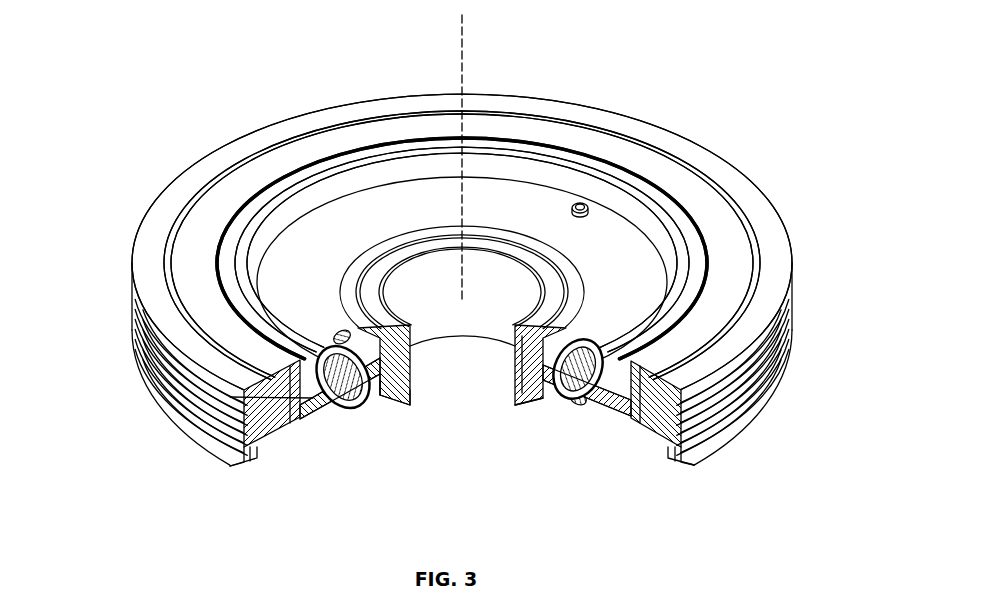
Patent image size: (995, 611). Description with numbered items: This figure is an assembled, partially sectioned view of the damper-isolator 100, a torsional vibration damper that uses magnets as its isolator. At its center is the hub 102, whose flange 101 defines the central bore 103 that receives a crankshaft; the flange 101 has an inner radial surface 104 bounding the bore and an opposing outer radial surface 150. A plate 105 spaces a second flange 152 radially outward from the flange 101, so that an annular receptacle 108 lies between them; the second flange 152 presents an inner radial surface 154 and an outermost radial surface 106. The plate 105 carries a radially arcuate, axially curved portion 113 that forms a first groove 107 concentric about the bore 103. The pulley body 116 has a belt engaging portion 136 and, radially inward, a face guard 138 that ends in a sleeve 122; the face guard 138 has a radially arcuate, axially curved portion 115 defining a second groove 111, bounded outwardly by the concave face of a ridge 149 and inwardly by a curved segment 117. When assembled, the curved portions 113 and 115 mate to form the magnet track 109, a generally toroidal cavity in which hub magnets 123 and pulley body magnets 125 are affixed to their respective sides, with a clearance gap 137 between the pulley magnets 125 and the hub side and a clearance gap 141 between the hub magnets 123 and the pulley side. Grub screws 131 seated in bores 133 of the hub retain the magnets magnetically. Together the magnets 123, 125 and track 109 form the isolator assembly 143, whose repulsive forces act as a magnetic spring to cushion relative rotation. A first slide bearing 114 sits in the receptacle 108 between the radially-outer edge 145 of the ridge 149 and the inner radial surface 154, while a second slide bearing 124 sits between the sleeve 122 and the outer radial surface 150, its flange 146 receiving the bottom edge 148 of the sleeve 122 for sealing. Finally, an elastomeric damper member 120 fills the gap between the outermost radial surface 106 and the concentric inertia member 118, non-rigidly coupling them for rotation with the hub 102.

The damper-isolator 100 is at (724, 47).
The flange 101 is at (516, 332).
The hub 102 is at (248, 298).
The central bore 103 is at (438, 277).
The inner radial surface 104 is at (410, 368).
The plate 105 is at (388, 217).
The outermost radial surface 106 is at (640, 293).
The first groove 107 is at (337, 237).
The annular receptacle 108 is at (377, 400).
The magnet track 109 is at (443, 200).
The second groove 111 is at (350, 417).
The radially arcuate, axially curved portion 113 is at (610, 250).
The first slide bearing 114 is at (150, 371).
The radially arcuate, axially curved portion 115 is at (575, 390).
The pulley body 116 is at (227, 450).
The curved segment 117 is at (370, 457).
The inertia member 118 is at (255, 182).
The elastomeric damper member 120 is at (233, 233).
The sleeve 122 is at (592, 293).
The hub magnets 123 is at (327, 367).
The second slide bearing 124 is at (524, 387).
The pulley body magnets 125 is at (560, 392).
The grub screws 131 is at (583, 204).
The bores 133 is at (350, 330).
The belt engaging portion 136 is at (750, 407).
The clearance gap 137 is at (577, 380).
The face guard 138 is at (610, 423).
The clearance gap 141 is at (340, 420).
The isolator assembly 143 is at (512, 208).
The radially-outer edge 145 is at (308, 417).
The flange 146 is at (522, 399).
The bottom edge 148 is at (403, 427).
The ridge 149 is at (690, 458).
The outer radial surface 150 is at (412, 355).
The second flange 152 is at (655, 440).
The inner radial surface 154 is at (628, 432).